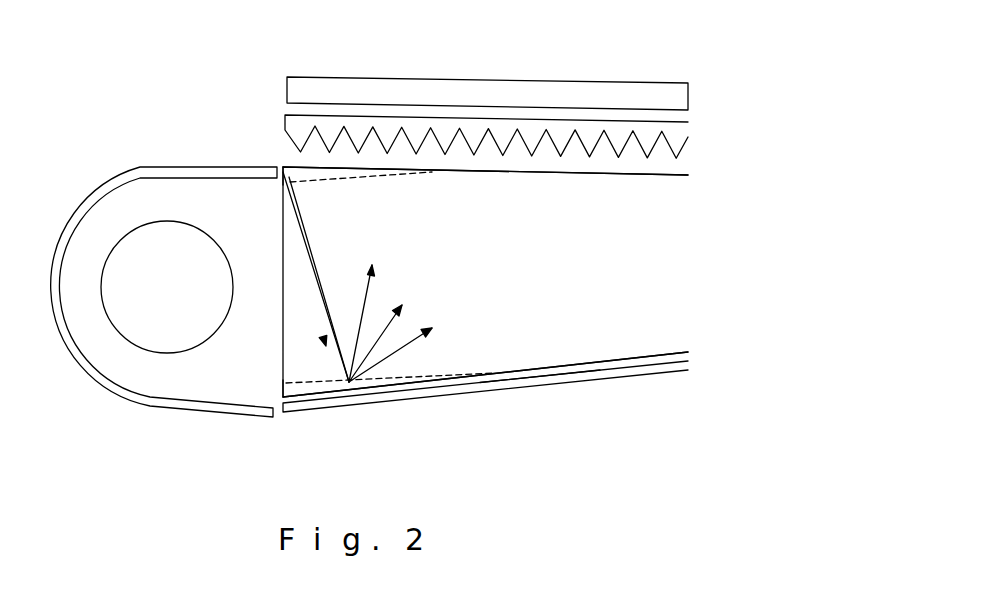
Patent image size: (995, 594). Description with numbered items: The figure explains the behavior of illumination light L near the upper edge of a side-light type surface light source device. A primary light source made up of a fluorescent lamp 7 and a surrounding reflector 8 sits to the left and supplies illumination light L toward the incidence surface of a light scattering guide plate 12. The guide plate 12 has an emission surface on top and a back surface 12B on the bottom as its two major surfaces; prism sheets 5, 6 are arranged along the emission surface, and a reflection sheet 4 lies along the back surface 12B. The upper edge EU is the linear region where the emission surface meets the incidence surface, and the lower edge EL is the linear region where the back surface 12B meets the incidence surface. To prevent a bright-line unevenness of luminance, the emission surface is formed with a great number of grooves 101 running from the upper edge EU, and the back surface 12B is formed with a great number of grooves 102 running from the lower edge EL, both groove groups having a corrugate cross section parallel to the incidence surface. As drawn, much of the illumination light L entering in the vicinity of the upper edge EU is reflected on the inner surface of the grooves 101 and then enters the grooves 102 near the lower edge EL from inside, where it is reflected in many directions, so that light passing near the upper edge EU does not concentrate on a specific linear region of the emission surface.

The reflection sheet 4 is at (349, 398).
The prism sheet 5 is at (594, 130).
The prism sheet 6 is at (528, 102).
The fluorescent lamp 7 is at (148, 257).
The reflector 8 is at (79, 204).
The light scattering guide plate 12 is at (609, 335).
The back surface 12B is at (538, 369).
The grooves 101 is at (312, 176).
The grooves 102 is at (311, 393).
The upper edge EU is at (283, 170).
The lower edge EL is at (283, 394).
The illumination light L is at (305, 240).